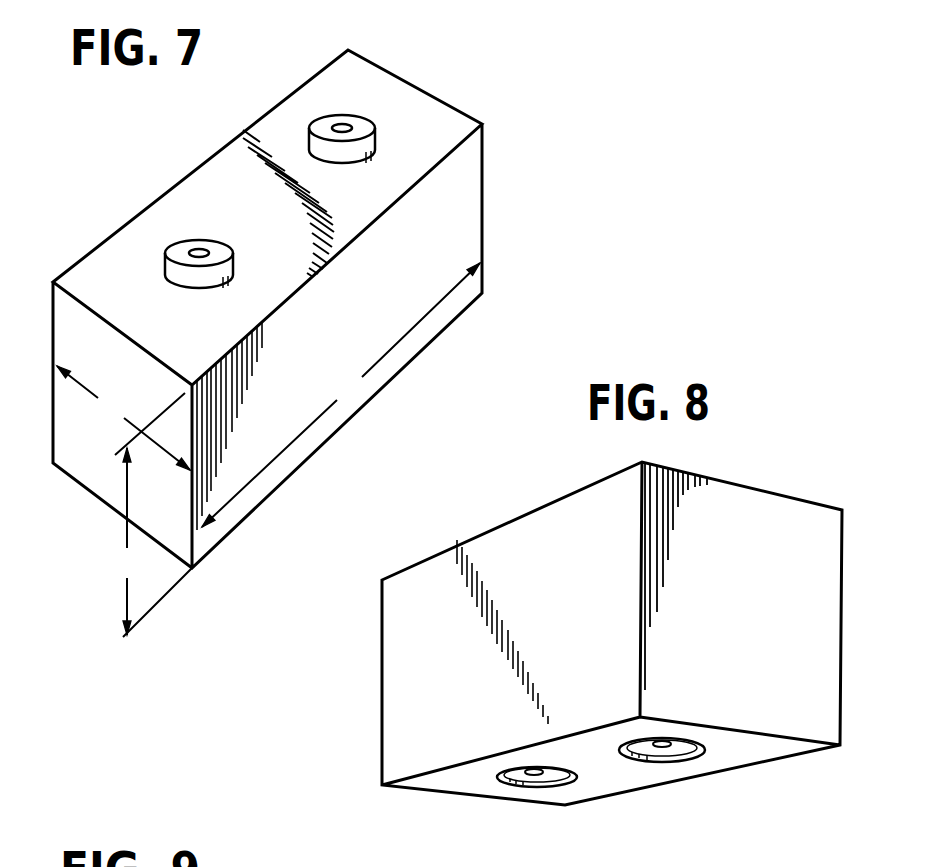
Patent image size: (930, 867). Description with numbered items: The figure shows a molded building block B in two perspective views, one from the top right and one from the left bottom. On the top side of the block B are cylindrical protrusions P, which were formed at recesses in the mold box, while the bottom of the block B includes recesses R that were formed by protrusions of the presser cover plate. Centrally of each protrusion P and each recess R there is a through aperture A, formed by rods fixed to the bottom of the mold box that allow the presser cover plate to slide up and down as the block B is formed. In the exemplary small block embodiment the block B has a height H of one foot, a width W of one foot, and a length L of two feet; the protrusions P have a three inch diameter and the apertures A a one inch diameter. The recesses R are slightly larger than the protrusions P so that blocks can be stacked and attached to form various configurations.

In FIG. 7, the building block B is at (334, 24).
In FIG. 8, the building block B is at (527, 482).
In FIG. 9, the building block B is at (278, 858).
In FIG. 7, the protrusions P is at (362, 121).
In FIG. 7, the through aperture A is at (345, 125).
In FIG. 8, the through aperture A is at (533, 778).
In FIG. 9, the through aperture A is at (308, 855).
In FIG. 8, the recesses R is at (503, 783).
In FIG. 7, the width W is at (123, 418).
In FIG. 7, the length L is at (341, 395).
In FIG. 7, the height H is at (153, 515).